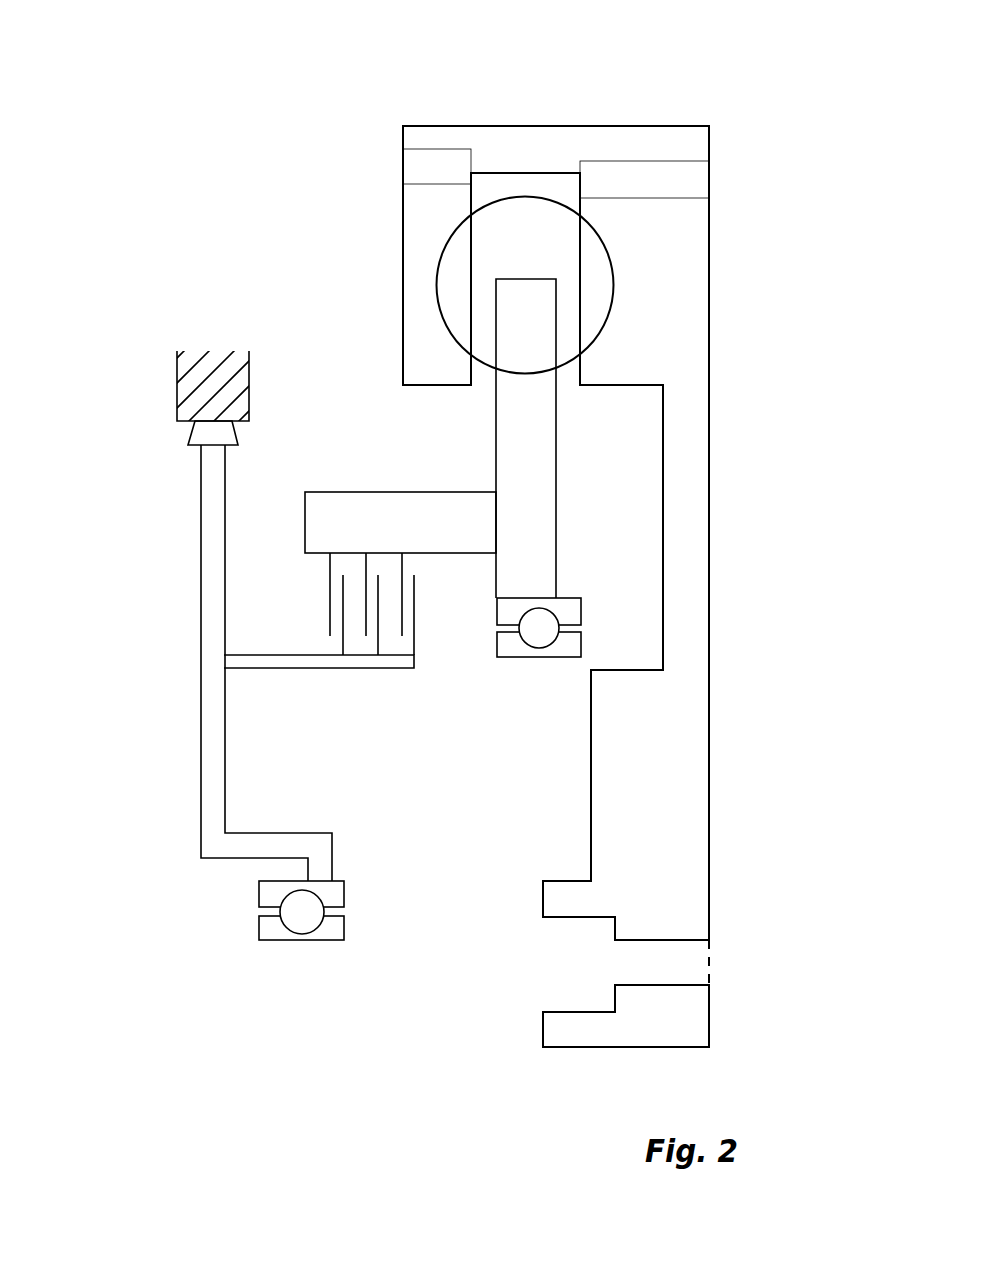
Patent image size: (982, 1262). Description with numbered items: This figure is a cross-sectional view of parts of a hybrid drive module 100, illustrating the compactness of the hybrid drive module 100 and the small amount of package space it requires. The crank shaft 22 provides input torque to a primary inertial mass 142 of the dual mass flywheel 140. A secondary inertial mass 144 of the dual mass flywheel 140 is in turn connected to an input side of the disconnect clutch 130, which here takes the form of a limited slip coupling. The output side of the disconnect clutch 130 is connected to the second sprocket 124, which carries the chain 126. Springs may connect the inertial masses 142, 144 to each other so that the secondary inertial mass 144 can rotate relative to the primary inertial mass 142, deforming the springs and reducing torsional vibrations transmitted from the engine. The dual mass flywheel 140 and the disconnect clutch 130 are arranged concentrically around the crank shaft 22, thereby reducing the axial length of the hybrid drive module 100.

The hybrid drive module 100 is at (735, 88).
The dual mass flywheel 140 is at (745, 238).
The primary inertial mass 142 is at (696, 315).
The secondary inertial mass 144 is at (530, 488).
The disconnect clutch 130 is at (429, 632).
The second sprocket 124 is at (207, 506).
The chain 126 is at (190, 383).
The crank shaft 22 is at (685, 970).